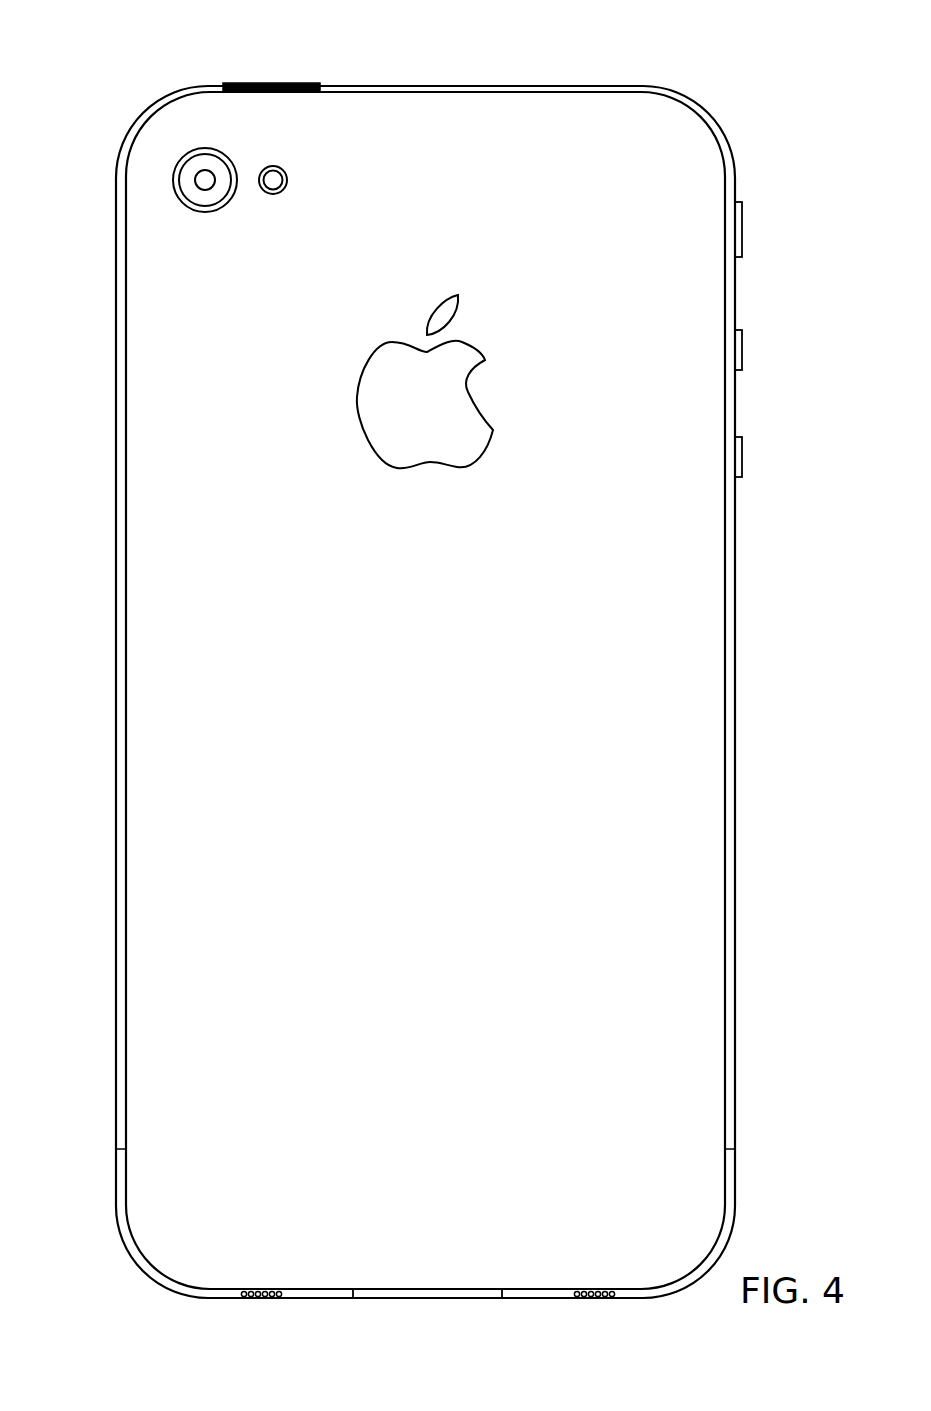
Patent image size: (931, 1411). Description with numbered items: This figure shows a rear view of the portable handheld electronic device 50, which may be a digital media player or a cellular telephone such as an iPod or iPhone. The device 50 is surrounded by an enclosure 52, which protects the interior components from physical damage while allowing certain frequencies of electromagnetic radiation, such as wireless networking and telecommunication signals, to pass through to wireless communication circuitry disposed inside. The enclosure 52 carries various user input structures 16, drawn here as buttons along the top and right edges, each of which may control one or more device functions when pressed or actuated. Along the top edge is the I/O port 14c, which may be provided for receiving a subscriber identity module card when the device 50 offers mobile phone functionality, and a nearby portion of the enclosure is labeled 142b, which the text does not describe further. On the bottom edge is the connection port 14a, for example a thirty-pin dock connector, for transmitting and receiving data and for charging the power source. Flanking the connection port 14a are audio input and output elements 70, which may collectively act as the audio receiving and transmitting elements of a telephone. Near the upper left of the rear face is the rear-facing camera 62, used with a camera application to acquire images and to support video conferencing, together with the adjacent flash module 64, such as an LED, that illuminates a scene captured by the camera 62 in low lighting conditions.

The portable handheld electronic device 50 is at (224, 47).
The enclosure 52 is at (116, 531).
The connection port 14a is at (412, 1299).
The I/O port 14c is at (434, 86).
The housing band portion 142b is at (590, 86).
The user input structures 16 is at (262, 85).
The rear-facing camera 62 is at (207, 145).
The flash module 64 is at (284, 171).
The audio input and output elements 70 is at (258, 1299).